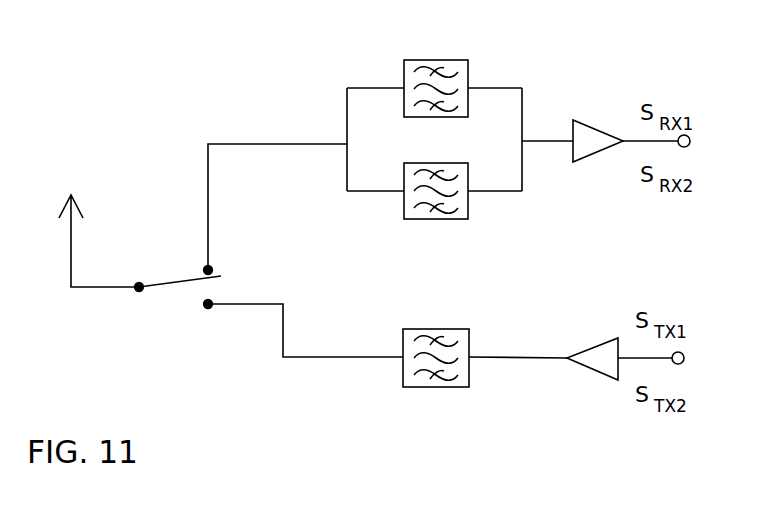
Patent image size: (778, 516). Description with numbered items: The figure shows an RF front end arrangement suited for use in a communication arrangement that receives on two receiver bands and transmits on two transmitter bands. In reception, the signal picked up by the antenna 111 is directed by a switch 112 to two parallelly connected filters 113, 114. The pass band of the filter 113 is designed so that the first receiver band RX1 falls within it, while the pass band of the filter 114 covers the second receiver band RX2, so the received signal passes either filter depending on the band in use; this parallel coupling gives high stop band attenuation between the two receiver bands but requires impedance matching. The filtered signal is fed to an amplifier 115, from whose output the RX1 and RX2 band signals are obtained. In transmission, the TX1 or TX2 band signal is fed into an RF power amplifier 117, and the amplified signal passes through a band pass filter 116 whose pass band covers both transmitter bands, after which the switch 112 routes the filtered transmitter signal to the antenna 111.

The antenna 111 is at (85, 203).
The switch 112 is at (170, 275).
The filter 113 is at (433, 55).
The filter 114 is at (430, 223).
The amplifier 115 is at (593, 120).
The band pass filter 116 is at (431, 327).
The RF power amplifier 117 is at (600, 342).